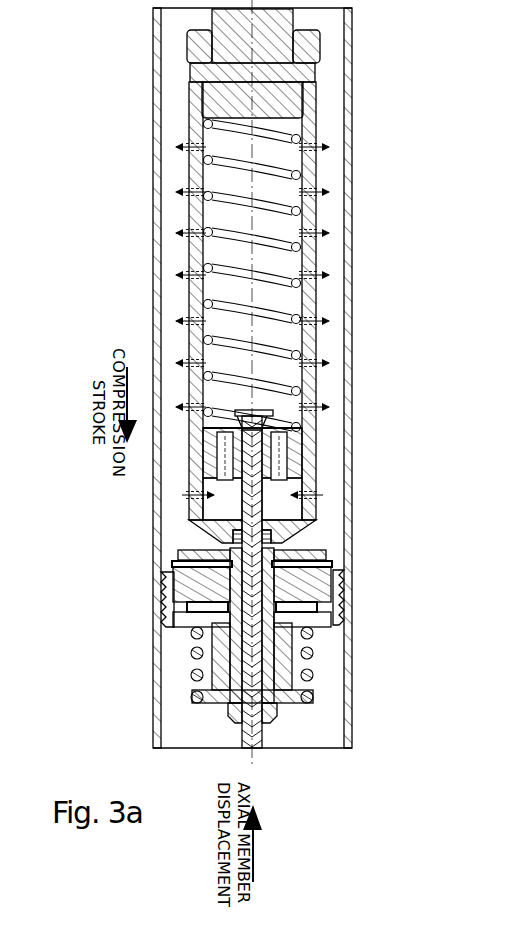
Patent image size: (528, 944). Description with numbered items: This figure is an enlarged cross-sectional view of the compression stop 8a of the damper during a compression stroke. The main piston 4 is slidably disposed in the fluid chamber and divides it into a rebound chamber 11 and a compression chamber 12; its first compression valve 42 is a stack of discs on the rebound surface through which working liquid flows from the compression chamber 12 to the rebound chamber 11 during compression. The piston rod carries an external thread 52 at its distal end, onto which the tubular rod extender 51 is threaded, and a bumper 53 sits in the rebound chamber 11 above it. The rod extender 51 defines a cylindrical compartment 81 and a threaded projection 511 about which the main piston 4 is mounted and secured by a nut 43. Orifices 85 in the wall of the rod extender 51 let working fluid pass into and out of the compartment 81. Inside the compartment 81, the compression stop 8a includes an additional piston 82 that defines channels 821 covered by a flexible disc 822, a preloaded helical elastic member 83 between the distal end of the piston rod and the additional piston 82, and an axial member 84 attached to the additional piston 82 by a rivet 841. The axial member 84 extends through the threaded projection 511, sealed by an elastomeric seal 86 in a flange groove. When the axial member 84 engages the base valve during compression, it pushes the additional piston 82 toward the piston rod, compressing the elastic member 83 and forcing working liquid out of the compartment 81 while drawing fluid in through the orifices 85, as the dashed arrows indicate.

The rebound chamber 11 is at (337, 70).
The compression chamber 12 is at (303, 735).
The main piston 4 is at (320, 625).
The first compression valve 42 is at (283, 562).
The nut 43 is at (303, 690).
The rod extender 51 is at (317, 133).
The threaded projection 511 is at (280, 663).
The external thread 52 is at (317, 107).
The bumper 53 is at (313, 50).
The compartment 81 is at (270, 225).
The additional piston 82 is at (341, 433).
The channel 821 is at (320, 432).
The flexible disc 822 is at (302, 426).
The elastic member 83 is at (263, 203).
The axial member 84 is at (263, 496).
The rivet 841 is at (275, 408).
The orifice 85 is at (325, 321).
The seal 86 is at (272, 540).
The compression stop 8a is at (338, 334).